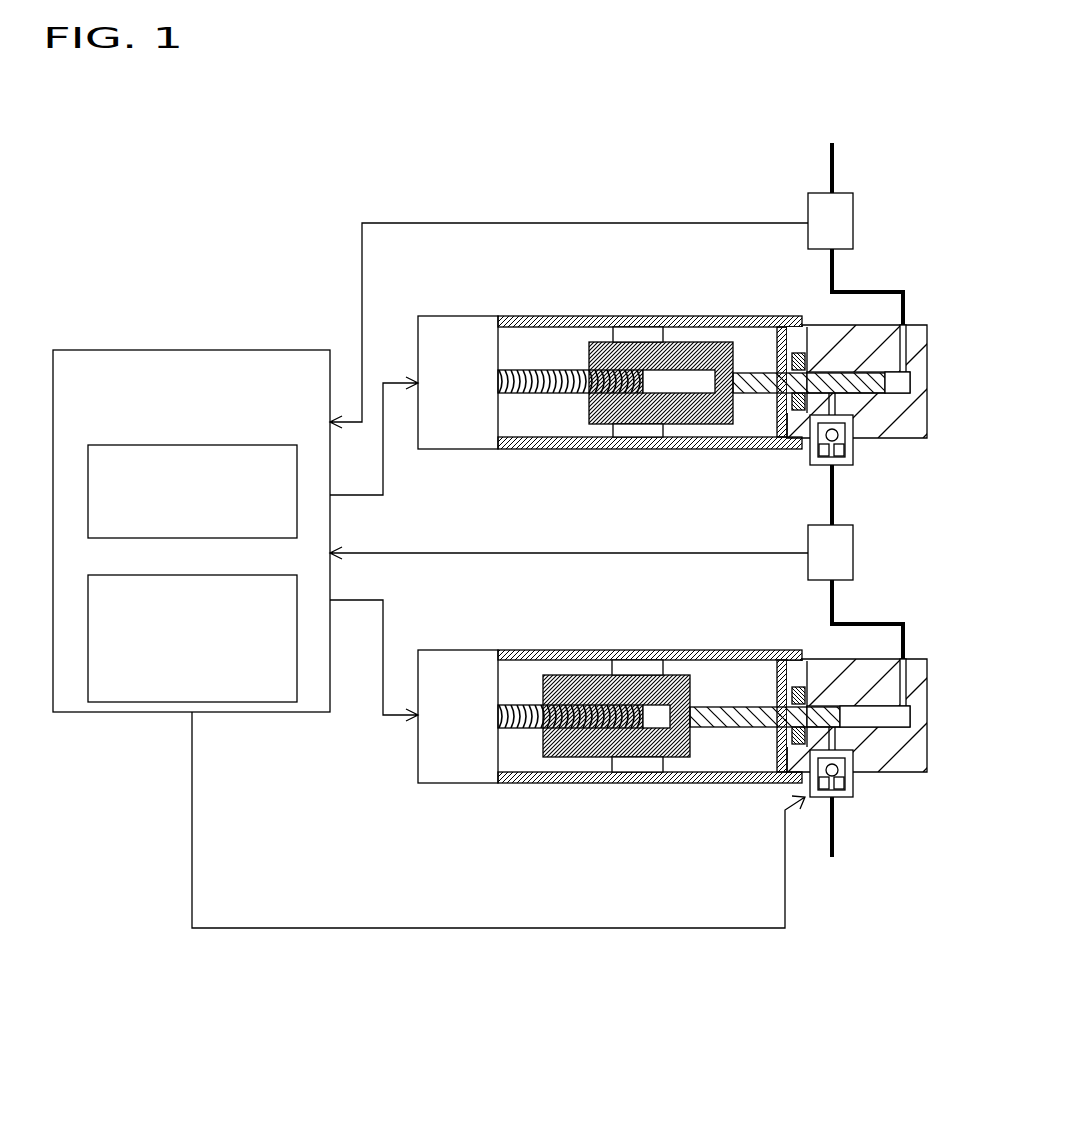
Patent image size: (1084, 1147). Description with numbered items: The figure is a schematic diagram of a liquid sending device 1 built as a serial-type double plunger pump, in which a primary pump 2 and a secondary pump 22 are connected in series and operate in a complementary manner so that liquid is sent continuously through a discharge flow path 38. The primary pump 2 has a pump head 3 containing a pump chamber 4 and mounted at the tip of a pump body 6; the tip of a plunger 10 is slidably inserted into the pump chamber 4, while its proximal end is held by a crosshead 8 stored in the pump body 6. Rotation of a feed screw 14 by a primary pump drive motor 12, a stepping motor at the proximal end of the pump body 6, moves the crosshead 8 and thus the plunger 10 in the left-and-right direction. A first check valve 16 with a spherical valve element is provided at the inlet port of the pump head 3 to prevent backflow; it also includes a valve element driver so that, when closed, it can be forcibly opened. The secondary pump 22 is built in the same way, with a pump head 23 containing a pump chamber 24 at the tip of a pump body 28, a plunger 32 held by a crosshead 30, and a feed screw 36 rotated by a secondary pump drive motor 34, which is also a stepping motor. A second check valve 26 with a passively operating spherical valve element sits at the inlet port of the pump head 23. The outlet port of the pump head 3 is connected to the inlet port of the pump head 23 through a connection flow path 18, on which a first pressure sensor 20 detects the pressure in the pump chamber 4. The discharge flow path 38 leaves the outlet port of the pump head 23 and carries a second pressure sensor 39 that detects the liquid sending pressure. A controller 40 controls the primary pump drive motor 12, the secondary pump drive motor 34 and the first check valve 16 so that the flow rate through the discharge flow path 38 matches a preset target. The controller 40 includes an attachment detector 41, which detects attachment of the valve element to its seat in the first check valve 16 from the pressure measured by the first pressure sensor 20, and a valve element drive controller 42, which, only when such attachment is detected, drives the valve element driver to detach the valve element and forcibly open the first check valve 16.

The liquid sending device 1 is at (276, 172).
The primary pump 2 is at (650, 900).
The pump head 3 is at (908, 772).
The pump chamber 4 is at (872, 718).
The pump body 6 is at (525, 783).
The crosshead 8 is at (638, 745).
The plunger 10 is at (720, 715).
The primary pump drive motor 12 is at (440, 783).
The feed screw 14 is at (563, 725).
The first check valve 16 is at (853, 797).
The connection flow path 18 is at (903, 624).
The first pressure sensor 20 is at (853, 558).
The secondary pump 22 is at (678, 494).
The pump head 23 is at (883, 438).
The pump chamber 24 is at (903, 385).
The second check valve 26 is at (812, 457).
The pump body 28 is at (523, 316).
The crosshead 30 is at (687, 355).
The plunger 32 is at (748, 378).
The secondary pump drive motor 34 is at (440, 316).
The feed screw 36 is at (560, 370).
The discharge flow path 38 is at (903, 292).
The second pressure sensor 39 is at (856, 205).
The controller 40 is at (150, 350).
The attachment detector 41 is at (150, 445).
The valve element drive controller 42 is at (150, 575).